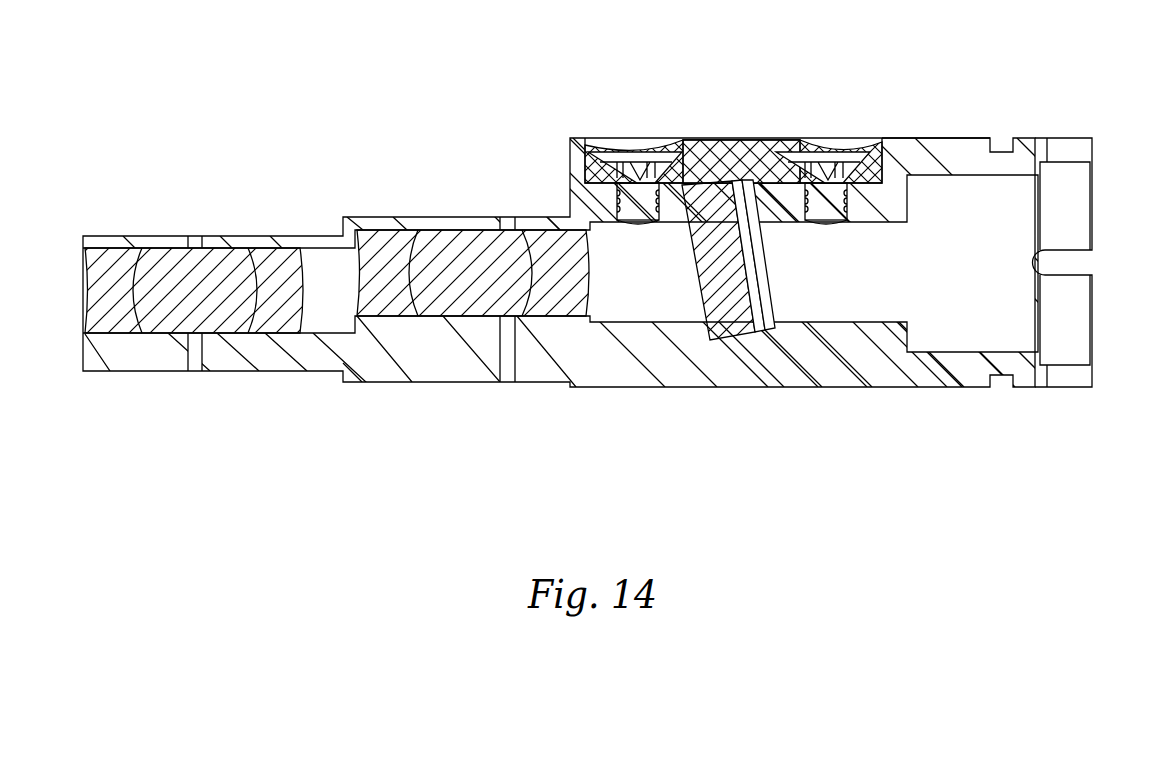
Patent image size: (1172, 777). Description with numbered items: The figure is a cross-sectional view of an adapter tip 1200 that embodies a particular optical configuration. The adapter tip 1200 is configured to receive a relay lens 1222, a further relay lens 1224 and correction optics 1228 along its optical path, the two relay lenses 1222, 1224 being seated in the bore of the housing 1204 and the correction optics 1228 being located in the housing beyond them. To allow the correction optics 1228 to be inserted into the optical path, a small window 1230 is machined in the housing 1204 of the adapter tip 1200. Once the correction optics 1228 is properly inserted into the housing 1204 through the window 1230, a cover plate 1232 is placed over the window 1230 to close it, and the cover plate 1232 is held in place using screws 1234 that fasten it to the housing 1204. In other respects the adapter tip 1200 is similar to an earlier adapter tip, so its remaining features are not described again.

The adapter tip 1200 is at (848, 388).
The housing 1204 is at (920, 138).
The relay lens 1222 is at (270, 333).
The relay lens 1224 is at (407, 316).
The correction optics 1228 is at (728, 338).
The window 1230 is at (753, 128).
The cover plate 1232 is at (712, 128).
The screws 1234 is at (843, 138).